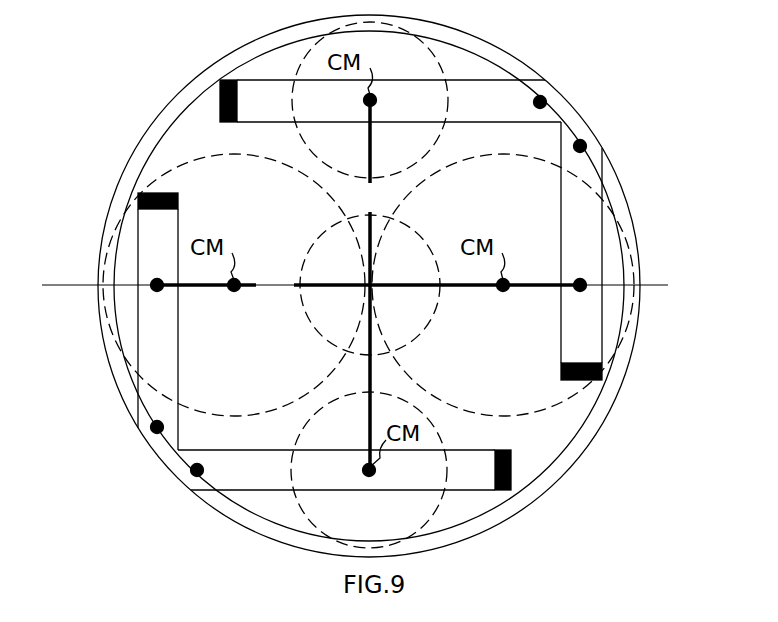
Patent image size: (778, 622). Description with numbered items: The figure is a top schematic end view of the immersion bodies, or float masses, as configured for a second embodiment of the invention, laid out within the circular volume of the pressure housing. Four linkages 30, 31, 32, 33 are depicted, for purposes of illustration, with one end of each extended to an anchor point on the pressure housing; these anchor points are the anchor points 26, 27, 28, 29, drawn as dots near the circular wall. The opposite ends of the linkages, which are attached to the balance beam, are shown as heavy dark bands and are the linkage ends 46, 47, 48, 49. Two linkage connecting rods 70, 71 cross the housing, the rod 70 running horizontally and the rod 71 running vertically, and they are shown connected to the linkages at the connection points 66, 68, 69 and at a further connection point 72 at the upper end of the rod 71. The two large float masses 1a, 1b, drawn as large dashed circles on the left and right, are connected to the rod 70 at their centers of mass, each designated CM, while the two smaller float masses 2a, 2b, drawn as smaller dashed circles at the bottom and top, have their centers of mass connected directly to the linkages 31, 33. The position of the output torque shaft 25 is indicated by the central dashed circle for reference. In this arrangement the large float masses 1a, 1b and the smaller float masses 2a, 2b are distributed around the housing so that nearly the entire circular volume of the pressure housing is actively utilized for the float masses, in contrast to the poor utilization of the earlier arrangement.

The output torque shaft 25 is at (422, 230).
The anchor point 26 is at (157, 427).
The anchor point 27 is at (197, 470).
The anchor point 28 is at (580, 146).
The anchor point 29 is at (540, 102).
The linkage 30 is at (152, 365).
The linkage 31 is at (485, 80).
The linkage 32 is at (230, 492).
The linkage 33 is at (587, 248).
The linkage end attached to balance beam 46 is at (138, 193).
The linkage end attached to balance beam 47 is at (220, 82).
The linkage end attached to balance beam 48 is at (511, 470).
The linkage end attached to balance beam 49 is at (600, 380).
The connection point 66 is at (157, 285).
The connection point 68 is at (369, 470).
The connection point 69 is at (580, 285).
The linkage connecting rod 70 is at (368, 285).
The linkage connecting rod 71 is at (369, 285).
The top center point 72 is at (372, 98).
The large float mass 1a is at (244, 348).
The large float mass 1b is at (507, 349).
The smaller float mass 2a is at (388, 525).
The smaller float mass 2b is at (412, 152).